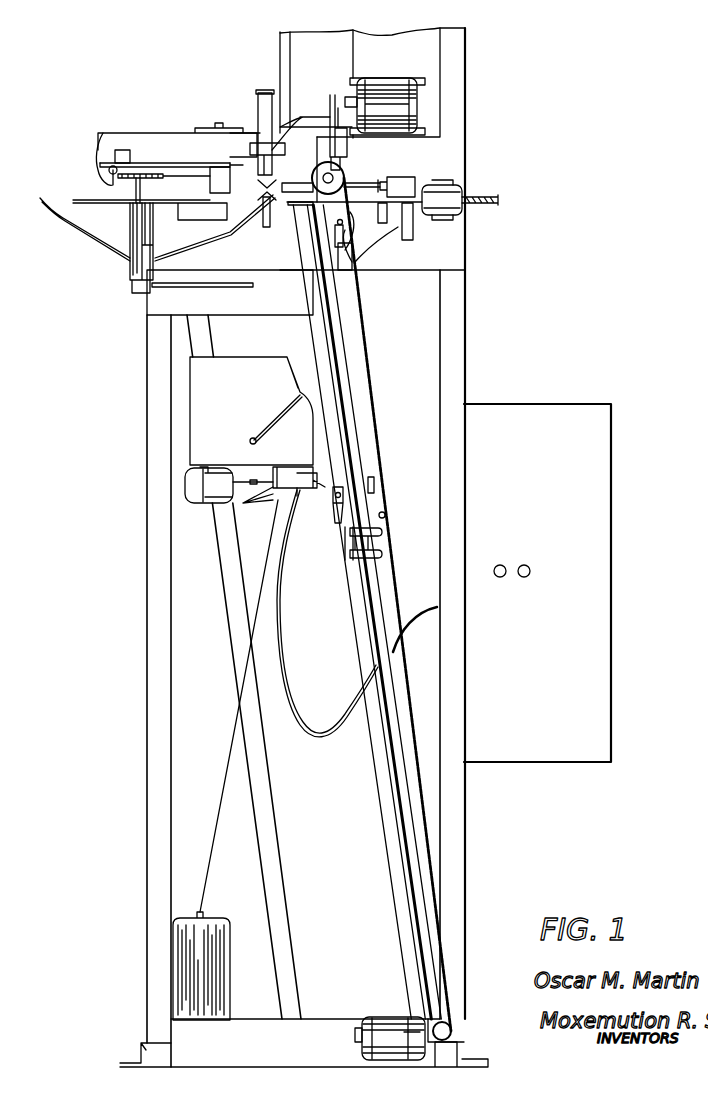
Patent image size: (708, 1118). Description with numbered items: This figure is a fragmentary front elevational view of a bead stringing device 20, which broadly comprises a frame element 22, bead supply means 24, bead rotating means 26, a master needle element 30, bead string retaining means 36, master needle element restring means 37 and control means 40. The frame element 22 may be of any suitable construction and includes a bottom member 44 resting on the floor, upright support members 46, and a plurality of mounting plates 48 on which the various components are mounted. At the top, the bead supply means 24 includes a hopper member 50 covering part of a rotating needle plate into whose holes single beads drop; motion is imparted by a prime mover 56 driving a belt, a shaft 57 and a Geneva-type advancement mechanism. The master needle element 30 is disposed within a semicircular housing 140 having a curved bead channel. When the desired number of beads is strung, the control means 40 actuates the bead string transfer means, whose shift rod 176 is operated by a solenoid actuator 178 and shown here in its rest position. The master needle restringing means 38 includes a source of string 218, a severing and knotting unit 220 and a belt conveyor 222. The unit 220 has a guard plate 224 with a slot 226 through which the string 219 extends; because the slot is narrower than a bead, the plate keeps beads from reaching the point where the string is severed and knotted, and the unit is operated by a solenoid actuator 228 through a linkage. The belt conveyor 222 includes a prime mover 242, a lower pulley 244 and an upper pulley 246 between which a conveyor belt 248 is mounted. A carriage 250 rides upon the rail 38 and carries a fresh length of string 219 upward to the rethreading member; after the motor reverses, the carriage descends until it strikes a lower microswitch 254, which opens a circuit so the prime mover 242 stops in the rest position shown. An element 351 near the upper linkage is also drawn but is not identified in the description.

The device 20 is at (468, 330).
The frame element 22 is at (156, 911).
The bead supply means 24 is at (392, 45).
The bead rotating means 26 is at (202, 128).
The master needle element 30 is at (265, 93).
The bead string retaining means 36 is at (115, 252).
The master needle element restring means 37 is at (350, 560).
The master needle restringing means 38 is at (355, 417).
The control means 40 is at (595, 705).
The bottom member 44 is at (237, 1054).
The upright support members 46 is at (146, 754).
The mounting plates 48 is at (445, 153).
The hopper member 50 is at (302, 42).
The prime mover 56 is at (397, 98).
The shaft 57 is at (340, 147).
The semicircular housing 140 is at (268, 90).
The shift rod 176 is at (360, 200).
The solenoid actuator 178 is at (461, 190).
The source of string 218 is at (220, 951).
The string 219 is at (239, 706).
The severing and knotting unit 220 is at (289, 484).
The belt conveyor 222 is at (382, 499).
The guard plate 224 is at (196, 421).
The slot 226 is at (271, 416).
The solenoid actuator 228 is at (188, 490).
The prime mover 242 is at (392, 1050).
The lower pulley 244 is at (451, 1031).
The upper pulley 246 is at (335, 177).
The conveyor belt 248 is at (411, 898).
The carriage 250 is at (382, 532).
The lower microswitch 254 is at (373, 490).
The linkage 351 is at (410, 228).